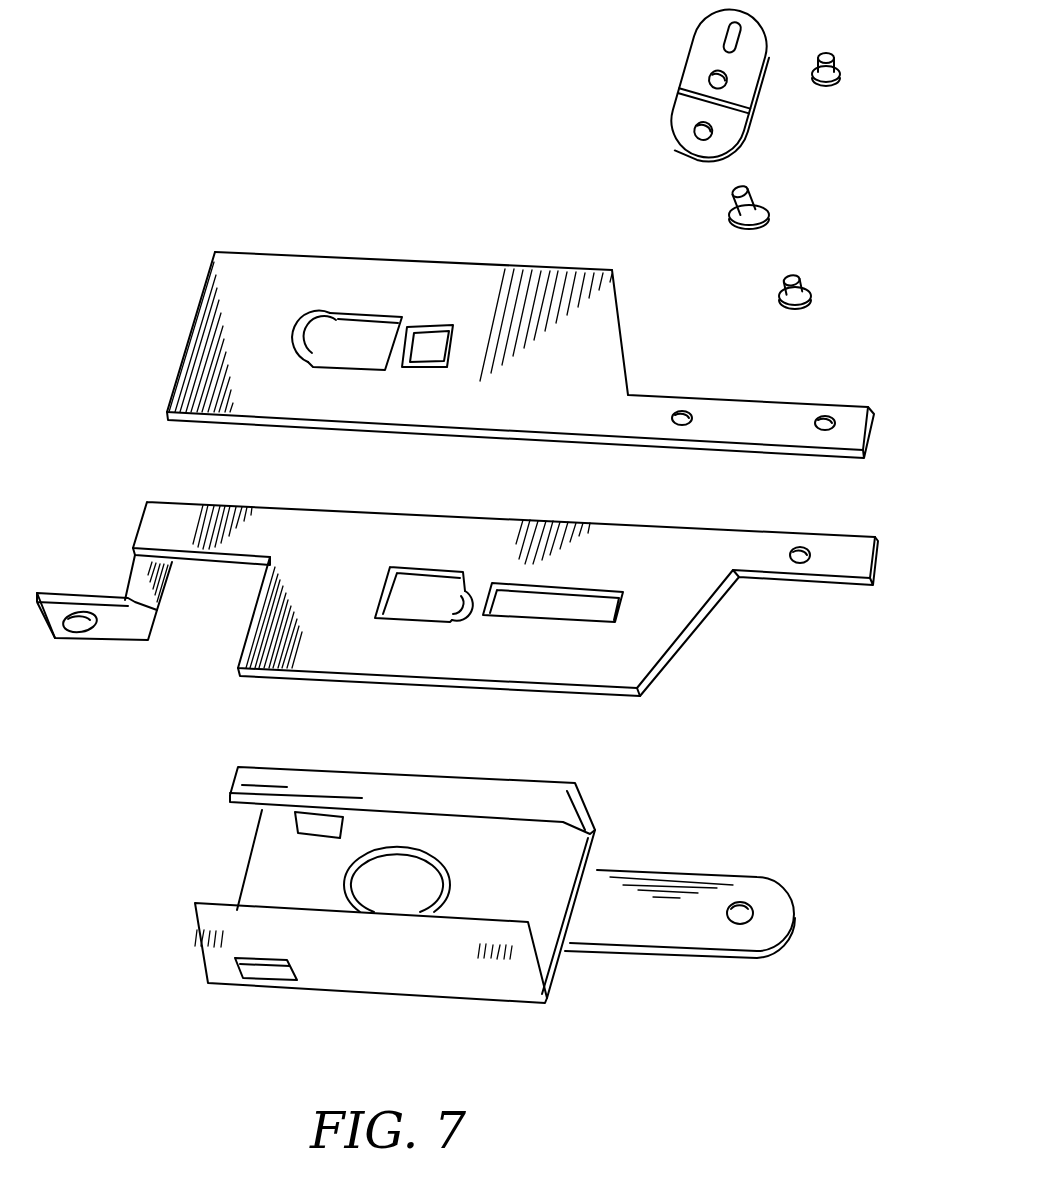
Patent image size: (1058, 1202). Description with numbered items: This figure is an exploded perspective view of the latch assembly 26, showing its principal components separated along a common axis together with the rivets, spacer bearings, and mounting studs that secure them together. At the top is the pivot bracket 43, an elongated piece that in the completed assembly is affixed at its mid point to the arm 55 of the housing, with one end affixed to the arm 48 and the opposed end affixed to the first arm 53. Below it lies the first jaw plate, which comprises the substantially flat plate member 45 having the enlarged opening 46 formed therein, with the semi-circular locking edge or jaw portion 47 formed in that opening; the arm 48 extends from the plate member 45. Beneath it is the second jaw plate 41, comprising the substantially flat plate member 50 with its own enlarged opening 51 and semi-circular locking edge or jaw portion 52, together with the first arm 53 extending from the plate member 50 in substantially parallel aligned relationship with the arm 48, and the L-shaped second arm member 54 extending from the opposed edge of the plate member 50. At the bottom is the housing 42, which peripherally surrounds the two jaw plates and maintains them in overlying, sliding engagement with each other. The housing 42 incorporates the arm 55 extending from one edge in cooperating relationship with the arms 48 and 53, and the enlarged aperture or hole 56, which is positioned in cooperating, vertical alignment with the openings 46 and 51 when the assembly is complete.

The latch assembly 26 is at (240, 198).
The second jaw plate 41 is at (660, 618).
The housing 42 is at (275, 865).
The pivot bracket 43 is at (690, 37).
The plate member 45 is at (245, 293).
The enlarged opening 46 is at (358, 357).
The semi-circular locking edge or jaw portion 47 is at (333, 343).
The arm 48 is at (347, 258).
The plate member 50 is at (322, 590).
The enlarged opening 51 is at (408, 605).
The semi-circular locking edge or jaw portion 52 is at (445, 597).
The first arm 53 is at (842, 562).
The second arm member 54 is at (140, 527).
The arm 55 is at (678, 870).
The enlarged aperture or hole 56 is at (363, 883).